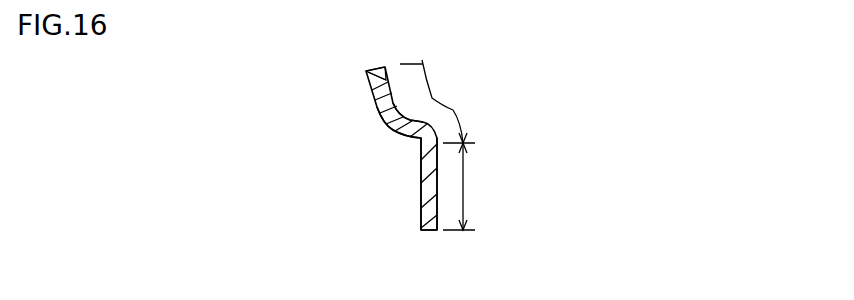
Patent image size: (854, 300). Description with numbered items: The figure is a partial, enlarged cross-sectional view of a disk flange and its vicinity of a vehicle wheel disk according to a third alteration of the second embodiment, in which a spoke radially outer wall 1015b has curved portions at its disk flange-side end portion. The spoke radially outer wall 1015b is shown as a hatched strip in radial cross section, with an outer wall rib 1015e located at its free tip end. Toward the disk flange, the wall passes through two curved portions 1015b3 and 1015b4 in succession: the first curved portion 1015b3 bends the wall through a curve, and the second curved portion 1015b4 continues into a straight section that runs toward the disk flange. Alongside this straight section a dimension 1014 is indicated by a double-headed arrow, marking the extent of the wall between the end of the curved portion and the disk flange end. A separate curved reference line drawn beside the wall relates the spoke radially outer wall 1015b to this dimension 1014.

The spoke radially outer wall 1015b is at (427, 98).
The tip end of bent portion 1015e is at (387, 83).
The curved bend portion 1015b3 is at (410, 133).
The straight vertical portion 1015b4 is at (421, 138).
The height dimension 1014 is at (463, 183).